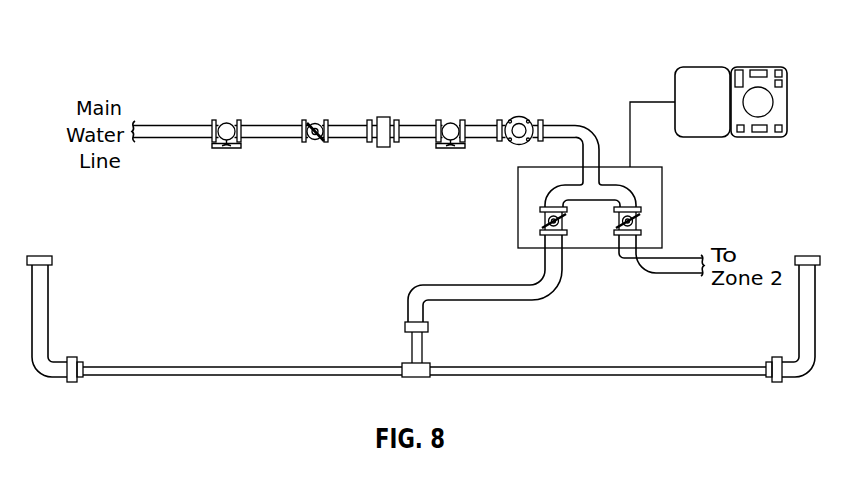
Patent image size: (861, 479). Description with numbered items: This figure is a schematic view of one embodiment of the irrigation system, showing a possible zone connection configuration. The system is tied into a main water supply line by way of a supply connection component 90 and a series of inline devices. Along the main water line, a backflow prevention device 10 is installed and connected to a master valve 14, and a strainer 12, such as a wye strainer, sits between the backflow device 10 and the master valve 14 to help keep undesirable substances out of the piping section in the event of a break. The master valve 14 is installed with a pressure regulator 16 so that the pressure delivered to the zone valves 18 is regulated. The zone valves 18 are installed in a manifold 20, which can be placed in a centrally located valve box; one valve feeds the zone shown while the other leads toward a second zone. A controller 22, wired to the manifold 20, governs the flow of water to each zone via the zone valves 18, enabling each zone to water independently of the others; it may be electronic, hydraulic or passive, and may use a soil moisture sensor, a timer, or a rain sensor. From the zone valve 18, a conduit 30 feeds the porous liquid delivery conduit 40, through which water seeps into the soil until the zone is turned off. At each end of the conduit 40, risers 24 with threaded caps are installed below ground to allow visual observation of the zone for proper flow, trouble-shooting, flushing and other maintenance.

The main water supply connection component 90 is at (226, 119).
The backflow prevention device 10 is at (317, 124).
The strainer 12 is at (383, 116).
The master valve 14 is at (450, 119).
The pressure regulator 16 is at (519, 116).
The controller 22 is at (759, 66).
The manifold 20 is at (518, 232).
The zone valves 18 is at (543, 222).
The conduit 30 is at (418, 287).
The porous liquid delivery conduit 40 is at (272, 366).
The risers 24 is at (48, 308).